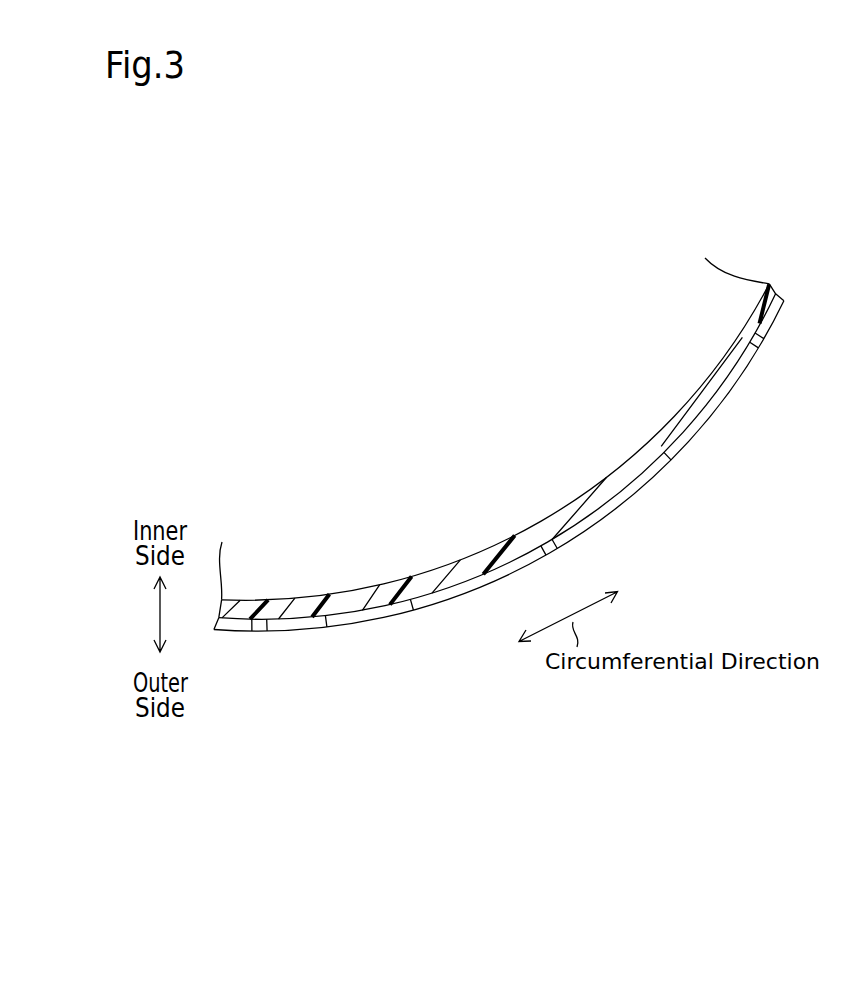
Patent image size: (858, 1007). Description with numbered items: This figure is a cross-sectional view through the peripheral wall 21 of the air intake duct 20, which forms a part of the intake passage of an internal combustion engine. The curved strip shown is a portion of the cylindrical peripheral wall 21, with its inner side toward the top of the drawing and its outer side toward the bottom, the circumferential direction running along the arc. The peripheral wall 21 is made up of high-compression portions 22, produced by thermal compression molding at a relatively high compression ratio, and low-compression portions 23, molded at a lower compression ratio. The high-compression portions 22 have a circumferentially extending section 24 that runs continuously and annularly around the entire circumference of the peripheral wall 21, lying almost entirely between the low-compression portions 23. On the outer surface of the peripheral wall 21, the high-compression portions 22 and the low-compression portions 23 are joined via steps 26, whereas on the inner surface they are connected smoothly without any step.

The air intake duct 20 is at (499, 524).
The peripheral wall 21 is at (340, 714).
The high-compression portion 22 is at (278, 607).
The low-compression portion 23 is at (766, 324).
The circumferentially extending section 24 is at (647, 428).
The step 26 is at (776, 304).